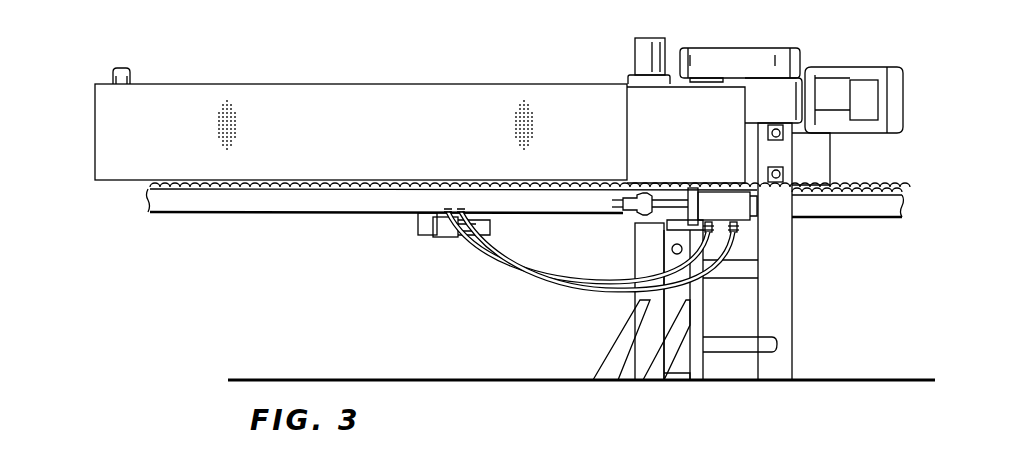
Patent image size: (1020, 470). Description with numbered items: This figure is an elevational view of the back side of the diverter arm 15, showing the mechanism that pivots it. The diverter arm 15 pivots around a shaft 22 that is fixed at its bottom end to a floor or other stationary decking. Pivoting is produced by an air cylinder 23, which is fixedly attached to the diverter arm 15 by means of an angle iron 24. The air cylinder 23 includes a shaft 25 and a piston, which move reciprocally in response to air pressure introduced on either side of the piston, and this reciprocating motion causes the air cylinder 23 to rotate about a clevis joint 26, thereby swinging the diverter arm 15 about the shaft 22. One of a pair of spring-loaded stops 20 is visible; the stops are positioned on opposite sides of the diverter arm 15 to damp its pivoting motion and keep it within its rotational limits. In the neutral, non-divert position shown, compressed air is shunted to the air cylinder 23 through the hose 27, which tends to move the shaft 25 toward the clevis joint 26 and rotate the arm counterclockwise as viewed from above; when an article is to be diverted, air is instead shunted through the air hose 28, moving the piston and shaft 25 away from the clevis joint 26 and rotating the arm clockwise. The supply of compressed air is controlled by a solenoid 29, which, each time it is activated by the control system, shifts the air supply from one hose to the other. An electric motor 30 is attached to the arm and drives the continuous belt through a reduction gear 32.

The diverter arm 15 is at (423, 84).
The spring-loaded stops 20 is at (702, 280).
The shaft 22 is at (652, 250).
The air cylinder 23 is at (717, 200).
The angle iron 24 is at (685, 193).
The shaft 25 is at (652, 190).
The clevis joint 26 is at (622, 220).
The hose 27 is at (525, 268).
The air hose 28 is at (508, 238).
The solenoid 29 is at (418, 237).
The electric motor 30 is at (838, 73).
The reduction gear 32 is at (748, 58).